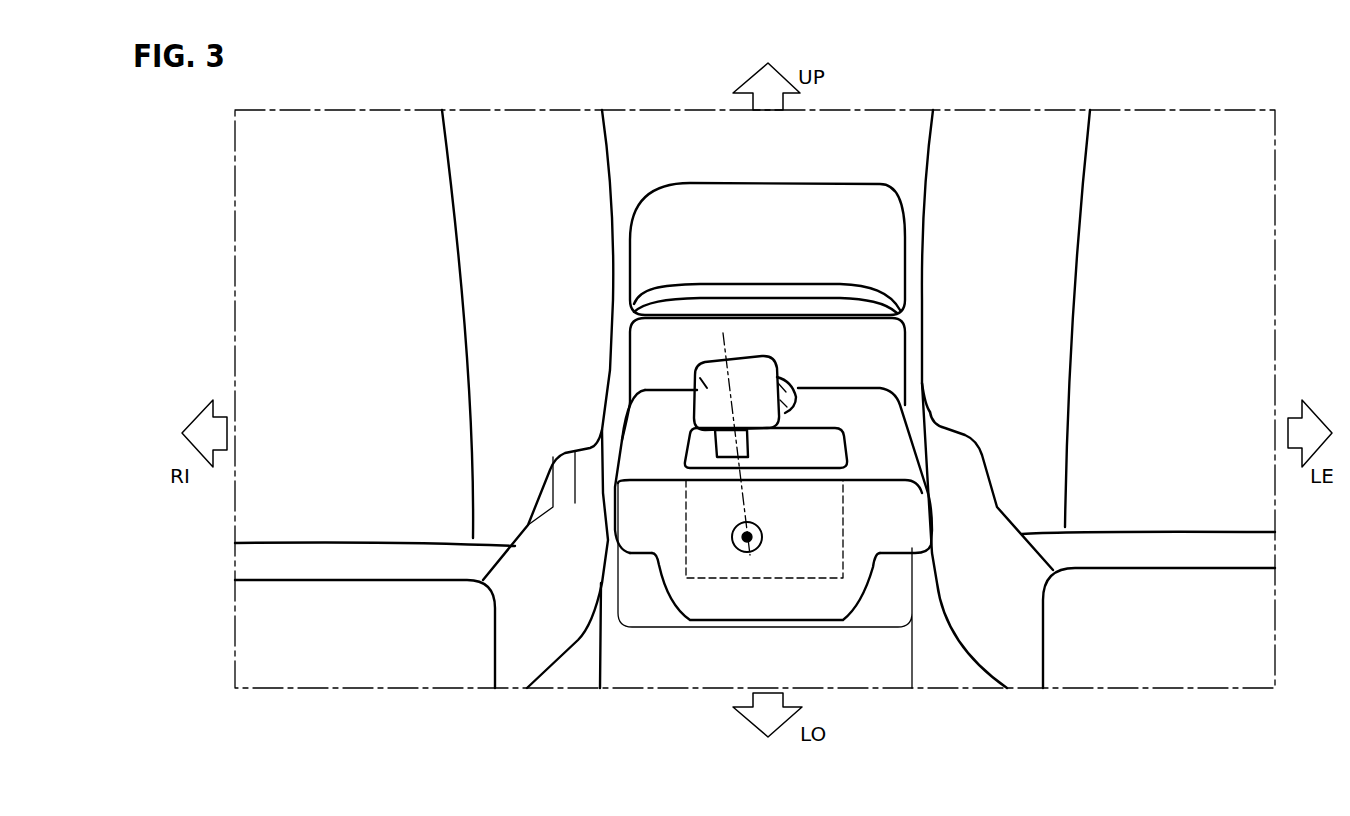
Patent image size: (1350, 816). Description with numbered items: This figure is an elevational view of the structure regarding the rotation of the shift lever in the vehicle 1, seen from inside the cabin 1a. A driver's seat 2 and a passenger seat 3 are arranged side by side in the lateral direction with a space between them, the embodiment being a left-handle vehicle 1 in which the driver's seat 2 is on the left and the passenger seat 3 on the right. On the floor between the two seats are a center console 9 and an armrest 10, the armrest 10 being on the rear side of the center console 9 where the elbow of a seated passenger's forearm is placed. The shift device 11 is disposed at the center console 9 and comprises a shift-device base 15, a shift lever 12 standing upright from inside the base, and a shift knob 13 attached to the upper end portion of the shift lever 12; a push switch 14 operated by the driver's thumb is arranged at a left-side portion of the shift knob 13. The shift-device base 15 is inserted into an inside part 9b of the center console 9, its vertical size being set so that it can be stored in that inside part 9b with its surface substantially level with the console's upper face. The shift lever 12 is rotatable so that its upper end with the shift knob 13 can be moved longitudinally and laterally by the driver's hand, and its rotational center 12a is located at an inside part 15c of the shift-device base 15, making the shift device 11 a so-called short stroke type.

The vehicle 1 is at (1080, 99).
The cabin 1a is at (886, 128).
The driver's seat 2 is at (1213, 182).
The passenger seat 3 is at (343, 147).
The center console 9 is at (848, 385).
The inside part of the center console 9b is at (869, 563).
The armrest 10 is at (698, 193).
The shift device 11 is at (678, 755).
The shift lever 12 is at (720, 443).
The rotational center 12a is at (771, 549).
The shift knob 13 is at (705, 374).
The push switch 14 is at (790, 382).
The shift-device base 15 is at (712, 580).
The inside part of the shift-device base 15c is at (816, 532).